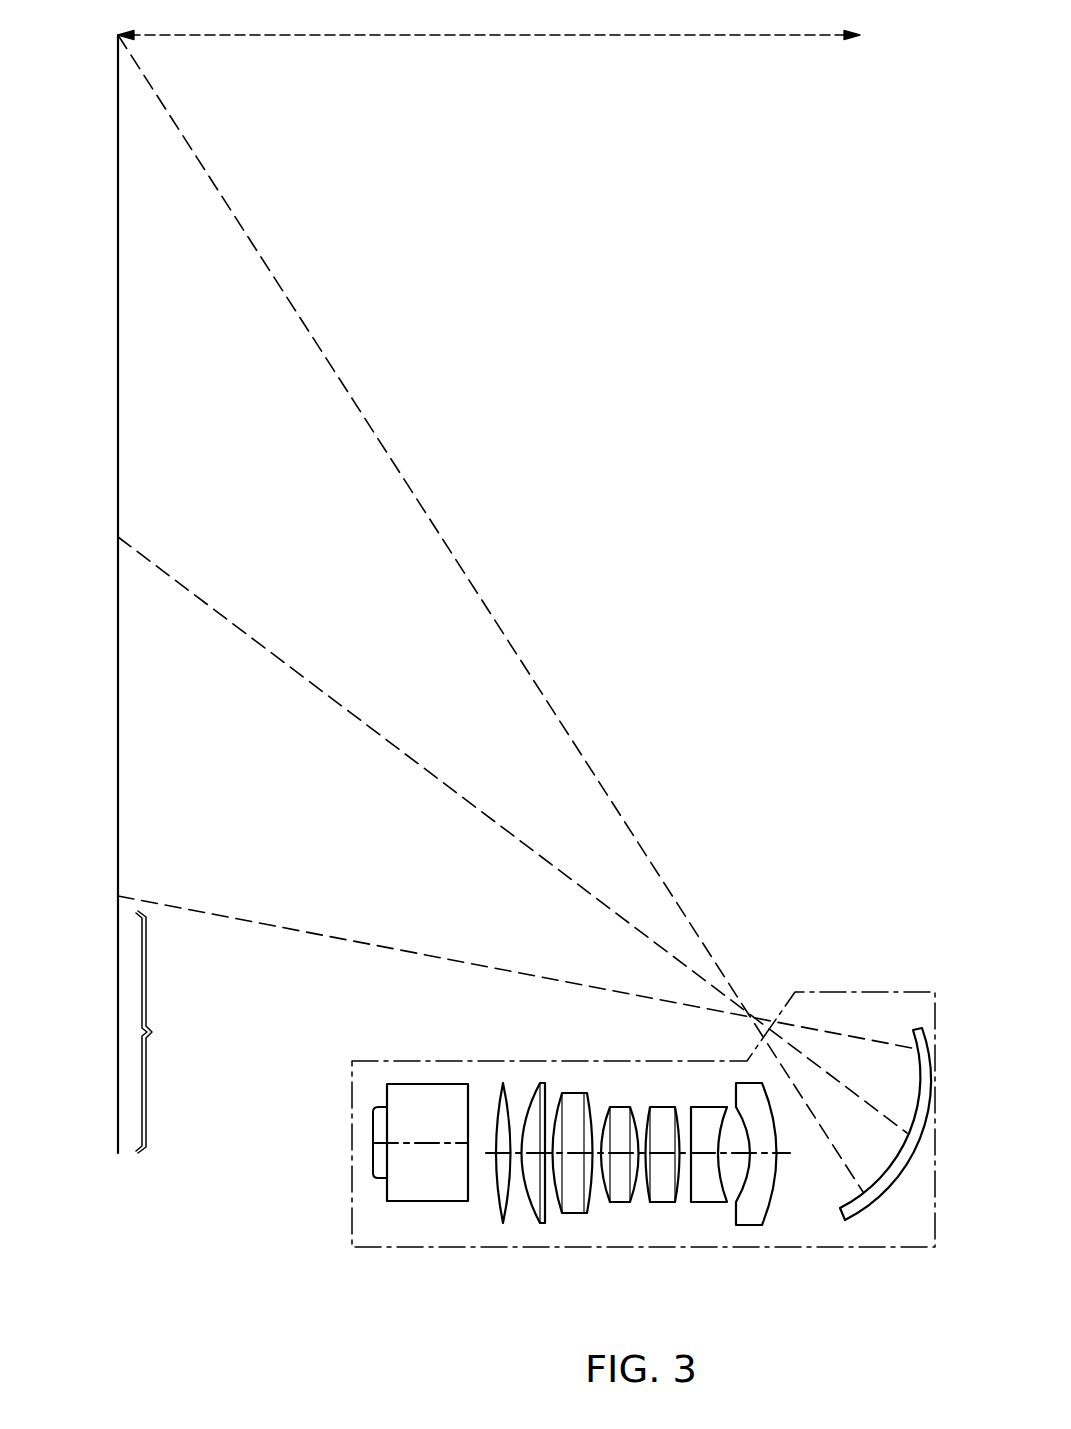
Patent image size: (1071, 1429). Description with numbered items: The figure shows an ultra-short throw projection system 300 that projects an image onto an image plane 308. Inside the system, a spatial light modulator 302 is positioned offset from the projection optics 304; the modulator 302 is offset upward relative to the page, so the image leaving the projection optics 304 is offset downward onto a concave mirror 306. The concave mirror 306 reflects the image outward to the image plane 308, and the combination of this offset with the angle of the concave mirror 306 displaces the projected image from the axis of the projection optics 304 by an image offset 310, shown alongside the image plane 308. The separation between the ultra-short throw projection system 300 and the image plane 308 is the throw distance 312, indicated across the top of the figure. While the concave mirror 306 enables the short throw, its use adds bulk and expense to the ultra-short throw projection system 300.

The ultra-short throw projection system 300 is at (209, 1264).
The spatial light modulator 302 is at (468, 1265).
The projection optics 304 is at (783, 1265).
The concave mirror 306 is at (863, 1212).
The image plane 308 is at (118, 595).
The image offset 310 is at (225, 1032).
The throw distance 312 is at (492, 38).